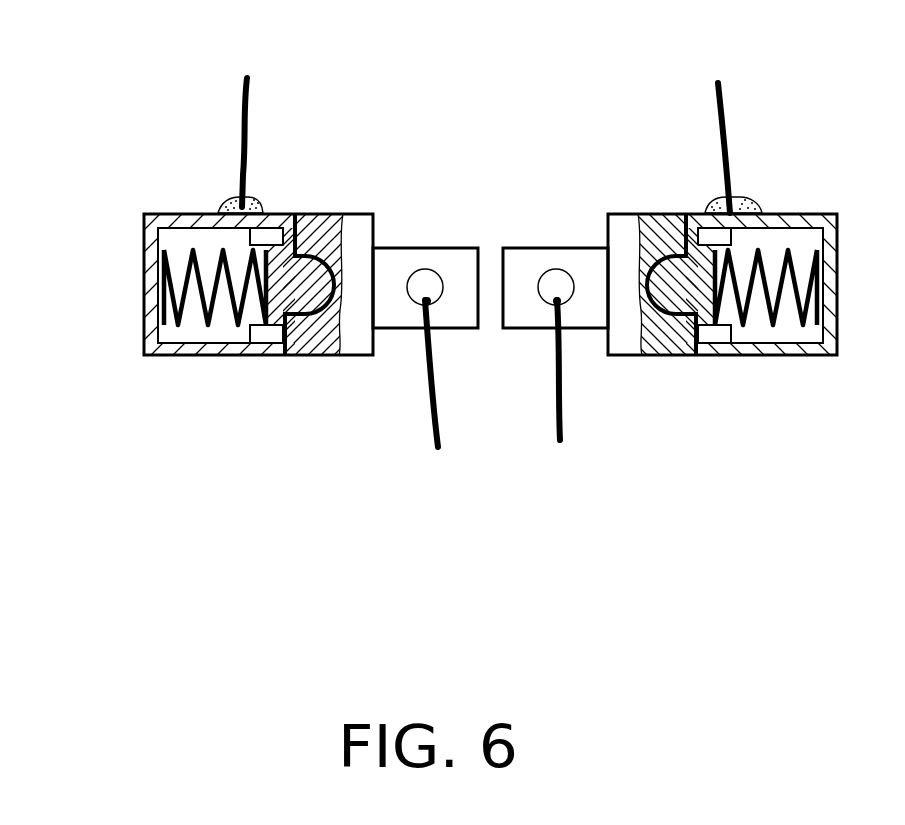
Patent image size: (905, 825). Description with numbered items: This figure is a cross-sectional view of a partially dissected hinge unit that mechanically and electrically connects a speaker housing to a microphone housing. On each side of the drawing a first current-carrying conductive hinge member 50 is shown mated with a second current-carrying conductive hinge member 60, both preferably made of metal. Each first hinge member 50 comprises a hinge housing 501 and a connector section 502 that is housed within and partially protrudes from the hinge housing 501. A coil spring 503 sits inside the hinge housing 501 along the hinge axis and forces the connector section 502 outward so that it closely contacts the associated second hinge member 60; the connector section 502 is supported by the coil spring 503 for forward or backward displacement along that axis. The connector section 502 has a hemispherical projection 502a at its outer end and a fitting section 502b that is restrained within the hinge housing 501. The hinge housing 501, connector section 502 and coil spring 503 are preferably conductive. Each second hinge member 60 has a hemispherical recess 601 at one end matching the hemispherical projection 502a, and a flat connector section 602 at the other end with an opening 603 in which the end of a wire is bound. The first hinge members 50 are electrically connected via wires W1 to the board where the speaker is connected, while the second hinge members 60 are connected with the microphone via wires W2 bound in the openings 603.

The wires W1 is at (240, 97).
The wires W2 is at (438, 440).
The first current-carrying conductive hinge member 50 is at (202, 307).
The hinge housing 501 is at (222, 348).
The connector section 502 is at (309, 250).
The hemispherical projection 502a is at (311, 300).
The fitting section 502b is at (273, 232).
The coil spring 503 is at (188, 267).
The second current-carrying conductive hinge member 60 is at (455, 214).
The hemispherical recess 601 is at (332, 250).
The connector section 602 is at (442, 268).
The opening 603 is at (416, 290).